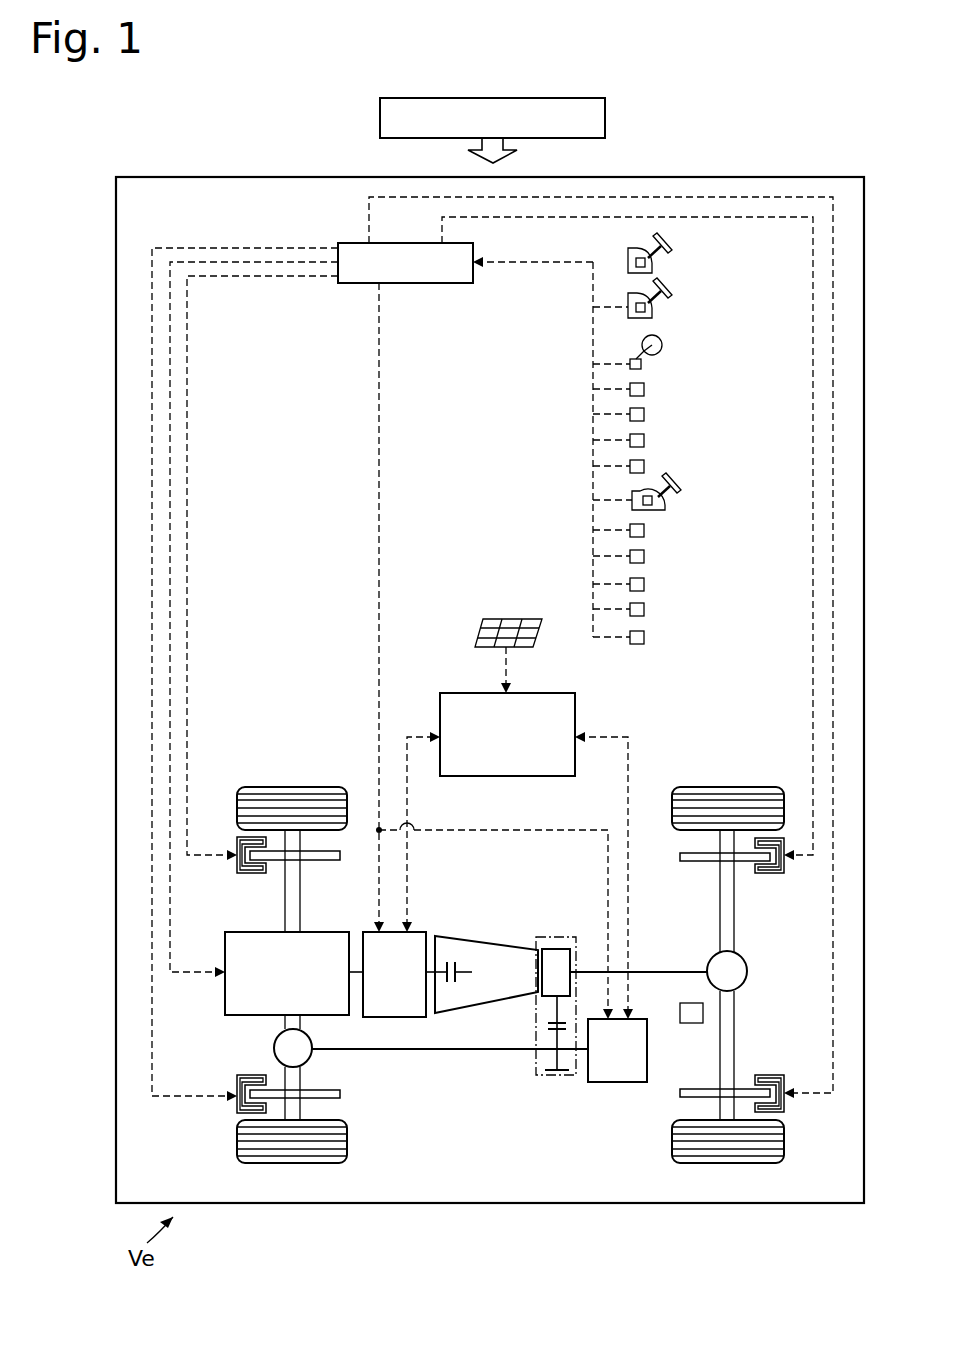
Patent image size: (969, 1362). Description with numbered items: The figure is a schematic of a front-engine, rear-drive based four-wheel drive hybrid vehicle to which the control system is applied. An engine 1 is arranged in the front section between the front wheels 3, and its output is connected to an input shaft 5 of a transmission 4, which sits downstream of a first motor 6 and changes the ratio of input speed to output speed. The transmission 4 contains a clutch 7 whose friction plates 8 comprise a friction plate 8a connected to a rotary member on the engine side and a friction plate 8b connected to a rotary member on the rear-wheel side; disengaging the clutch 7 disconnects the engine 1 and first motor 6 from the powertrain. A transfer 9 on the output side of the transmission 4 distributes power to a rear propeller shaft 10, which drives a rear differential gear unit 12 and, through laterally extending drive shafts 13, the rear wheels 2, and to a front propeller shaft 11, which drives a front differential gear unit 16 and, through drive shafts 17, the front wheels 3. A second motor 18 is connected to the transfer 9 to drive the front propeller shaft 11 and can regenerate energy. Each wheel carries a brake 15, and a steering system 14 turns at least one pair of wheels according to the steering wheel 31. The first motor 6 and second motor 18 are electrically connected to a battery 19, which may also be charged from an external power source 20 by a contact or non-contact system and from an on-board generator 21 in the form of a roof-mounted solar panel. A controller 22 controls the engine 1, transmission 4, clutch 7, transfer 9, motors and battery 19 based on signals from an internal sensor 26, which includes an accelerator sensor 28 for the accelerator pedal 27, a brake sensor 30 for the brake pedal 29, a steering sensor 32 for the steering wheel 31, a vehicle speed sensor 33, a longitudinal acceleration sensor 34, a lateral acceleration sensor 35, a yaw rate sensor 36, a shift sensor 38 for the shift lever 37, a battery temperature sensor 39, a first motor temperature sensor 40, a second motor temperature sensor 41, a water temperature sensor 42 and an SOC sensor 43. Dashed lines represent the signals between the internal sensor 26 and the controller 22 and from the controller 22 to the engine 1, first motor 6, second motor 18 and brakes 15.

The engine 1 is at (225, 997).
The rear wheels 2 is at (728, 786).
The front wheels 3 is at (298, 786).
The transmission 4 is at (487, 1003).
The input shaft 5 is at (441, 978).
The first motor 6 is at (398, 1018).
The clutch 7 is at (477, 952).
The friction plate 8 is at (455, 919).
The friction plate 8a is at (447, 960).
The friction plate 8b is at (457, 960).
The transfer 9 is at (551, 1077).
The rear propeller shaft 10 is at (653, 974).
The front propeller shaft 11 is at (415, 1050).
The rear differential gear unit 12 is at (748, 969).
The drive shafts 13 is at (720, 902).
The steering system 14 is at (692, 1024).
The brake device 15 is at (248, 874).
The front differential gear unit 16 is at (273, 1040).
The drive shafts 17 is at (301, 897).
The second motor 18 is at (612, 1083).
The battery 19 is at (513, 777).
The external power source 20 is at (606, 120).
The on-board generator 21 is at (515, 619).
The controller 22 is at (405, 284).
The internal sensor 26 is at (566, 350).
The accelerator pedal 27 is at (672, 246).
The accelerator sensor 28 is at (652, 268).
The brake pedal 29 is at (672, 292).
The brake sensor 30 is at (652, 313).
The steering wheel 31 is at (663, 342).
The steering sensor 32 is at (642, 367).
The vehicle speed sensor 33 is at (645, 389).
The longitudinal acceleration sensor 34 is at (645, 414).
The lateral acceleration sensor 35 is at (645, 440).
The yaw rate sensor 36 is at (645, 466).
The shift lever 37 is at (680, 484).
The shift sensor 38 is at (666, 507).
The battery temperature sensor 39 is at (645, 530).
The first motor temperature sensor 40 is at (645, 556).
The second motor temperature sensor 41 is at (645, 584).
The water temperature sensor 42 is at (645, 609).
The SOC sensor 43 is at (645, 637).